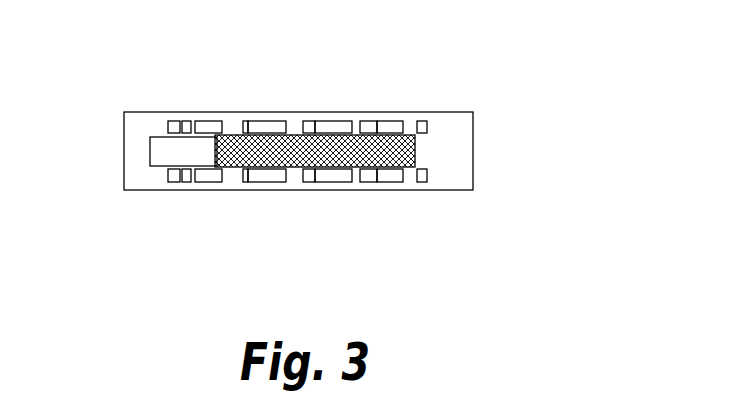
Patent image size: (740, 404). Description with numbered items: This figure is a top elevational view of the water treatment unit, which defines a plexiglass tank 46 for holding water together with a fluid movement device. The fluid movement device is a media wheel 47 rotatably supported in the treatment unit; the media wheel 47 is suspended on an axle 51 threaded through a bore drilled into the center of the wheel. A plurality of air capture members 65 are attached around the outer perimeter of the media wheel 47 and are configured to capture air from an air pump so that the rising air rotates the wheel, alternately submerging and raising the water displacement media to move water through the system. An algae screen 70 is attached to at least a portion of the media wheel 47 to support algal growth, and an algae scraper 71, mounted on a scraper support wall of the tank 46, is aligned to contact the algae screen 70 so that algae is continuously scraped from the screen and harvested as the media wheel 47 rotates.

The tank 46 is at (473, 128).
The media wheel 47 is at (415, 140).
The axle 51 is at (296, 143).
The air capture members 65 is at (205, 125).
The algae screen 70 is at (270, 152).
The algae scraper 71 is at (158, 155).